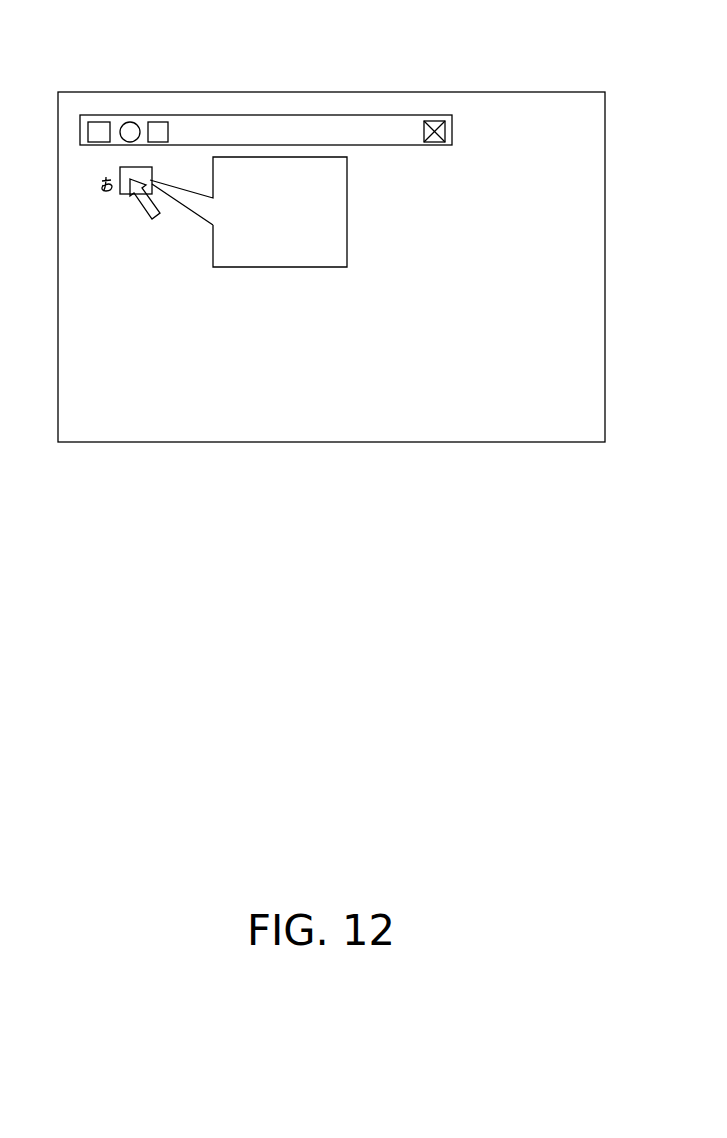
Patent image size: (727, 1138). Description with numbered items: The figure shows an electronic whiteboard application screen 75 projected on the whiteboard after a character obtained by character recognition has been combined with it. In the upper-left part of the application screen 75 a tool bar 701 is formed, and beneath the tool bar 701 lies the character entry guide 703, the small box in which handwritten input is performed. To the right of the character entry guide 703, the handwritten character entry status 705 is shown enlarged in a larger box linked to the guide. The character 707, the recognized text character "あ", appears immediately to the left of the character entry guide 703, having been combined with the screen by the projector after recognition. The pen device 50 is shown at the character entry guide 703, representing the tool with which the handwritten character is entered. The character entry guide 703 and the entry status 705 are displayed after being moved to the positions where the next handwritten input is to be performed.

The electronic whiteboard application screen 75 is at (539, 67).
The tool bar 701 is at (437, 147).
The character entry guide 703 is at (128, 166).
The handwritten character entry status 705 is at (348, 250).
The character 707 is at (103, 197).
The pen device 50 is at (157, 223).